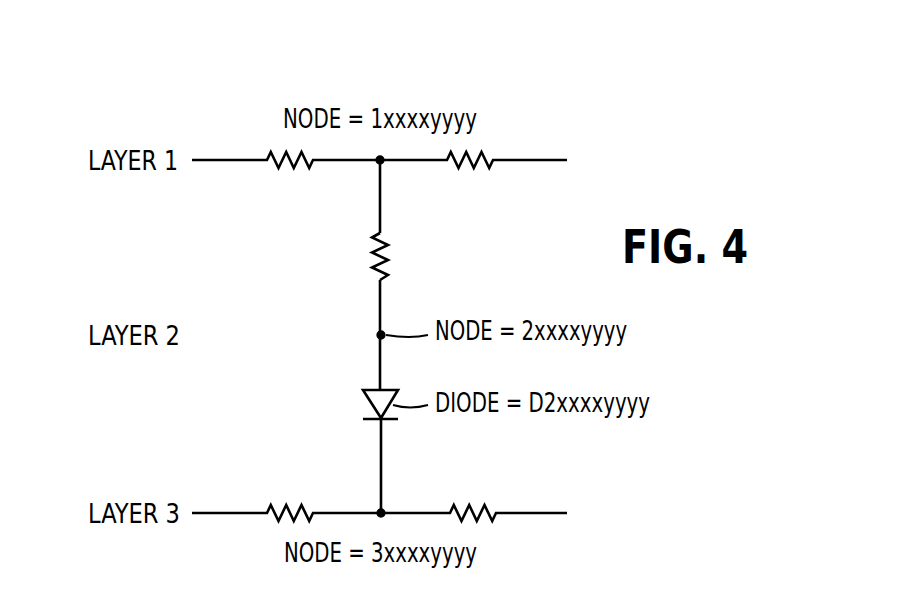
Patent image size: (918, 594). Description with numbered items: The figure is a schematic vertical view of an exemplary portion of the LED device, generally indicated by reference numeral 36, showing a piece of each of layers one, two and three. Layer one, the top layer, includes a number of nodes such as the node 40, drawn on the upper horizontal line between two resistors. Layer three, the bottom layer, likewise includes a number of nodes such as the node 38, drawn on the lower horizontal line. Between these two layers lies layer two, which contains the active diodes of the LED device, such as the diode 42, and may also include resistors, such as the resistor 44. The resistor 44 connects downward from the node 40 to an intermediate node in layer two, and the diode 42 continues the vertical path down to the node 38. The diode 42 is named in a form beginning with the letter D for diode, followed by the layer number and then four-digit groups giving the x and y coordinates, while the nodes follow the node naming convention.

The exemplary portion of the LED device 36 is at (240, 122).
The node 40 is at (383, 137).
The resistor 44 is at (387, 250).
The diode 42 is at (372, 405).
The node 38 is at (382, 537).